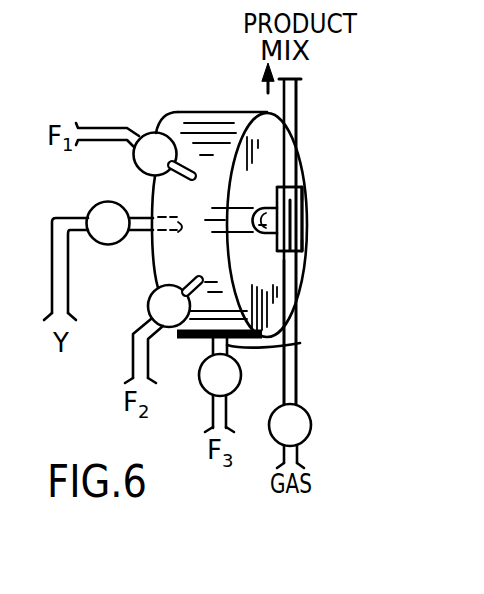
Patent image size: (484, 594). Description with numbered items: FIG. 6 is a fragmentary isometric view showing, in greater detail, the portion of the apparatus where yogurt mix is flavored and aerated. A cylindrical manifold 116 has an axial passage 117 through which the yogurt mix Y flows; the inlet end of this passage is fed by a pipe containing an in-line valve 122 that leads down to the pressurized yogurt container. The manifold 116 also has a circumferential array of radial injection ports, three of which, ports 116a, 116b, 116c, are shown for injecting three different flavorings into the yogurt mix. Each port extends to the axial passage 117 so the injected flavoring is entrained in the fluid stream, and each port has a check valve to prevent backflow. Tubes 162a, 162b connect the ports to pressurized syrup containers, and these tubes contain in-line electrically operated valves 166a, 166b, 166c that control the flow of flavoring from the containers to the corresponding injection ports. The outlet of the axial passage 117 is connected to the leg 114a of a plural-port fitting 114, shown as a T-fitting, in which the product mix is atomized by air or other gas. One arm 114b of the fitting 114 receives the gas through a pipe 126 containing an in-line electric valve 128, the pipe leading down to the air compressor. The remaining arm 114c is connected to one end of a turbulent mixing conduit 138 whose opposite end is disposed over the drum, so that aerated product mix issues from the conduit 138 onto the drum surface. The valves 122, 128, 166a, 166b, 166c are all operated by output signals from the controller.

The cylindrical manifold 116 is at (303, 174).
The injection port 116a is at (206, 152).
The injection port 116b is at (187, 279).
The injection port 116c is at (300, 343).
The plural-port fitting 114 is at (305, 226).
The leg of fitting 114a is at (255, 212).
The arm of fitting 114b is at (300, 249).
The arm of fitting 114c is at (306, 199).
The axial passage 117 is at (150, 204).
The in-line valve 122 is at (108, 201).
The pipe 126 is at (294, 322).
The in-line electric valve 128 is at (310, 417).
The turbulent mixing passage or conduit 138 is at (300, 100).
The tube or pipe 162a is at (110, 128).
The tube or pipe 162b is at (129, 343).
The in-line electrically operated valve 166a is at (149, 131).
The in-line electrically operated valve 166b is at (168, 328).
The in-line electrically operated valve 166c is at (240, 373).